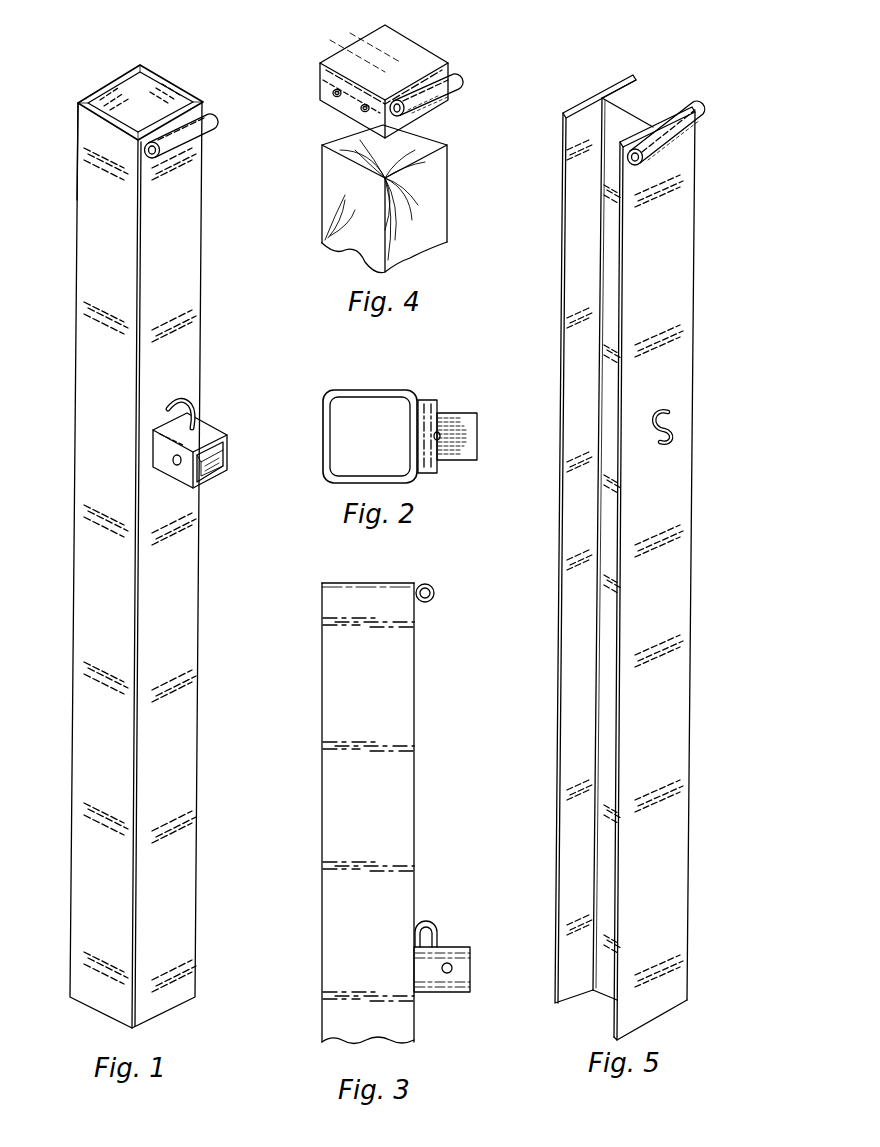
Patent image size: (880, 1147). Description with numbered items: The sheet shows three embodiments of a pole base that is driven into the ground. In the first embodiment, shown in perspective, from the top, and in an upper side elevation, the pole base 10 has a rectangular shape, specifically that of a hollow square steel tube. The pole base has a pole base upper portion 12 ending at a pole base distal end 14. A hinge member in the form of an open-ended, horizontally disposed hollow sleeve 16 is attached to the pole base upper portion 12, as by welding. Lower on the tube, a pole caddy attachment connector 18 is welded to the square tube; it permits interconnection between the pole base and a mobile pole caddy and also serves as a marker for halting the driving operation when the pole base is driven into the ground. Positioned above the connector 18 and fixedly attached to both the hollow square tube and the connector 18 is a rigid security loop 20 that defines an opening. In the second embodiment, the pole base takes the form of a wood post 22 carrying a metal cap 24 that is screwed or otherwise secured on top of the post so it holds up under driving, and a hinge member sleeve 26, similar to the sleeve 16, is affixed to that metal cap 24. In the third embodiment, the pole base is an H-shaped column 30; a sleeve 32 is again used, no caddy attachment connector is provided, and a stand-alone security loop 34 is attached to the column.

In FIG. 1, the pole base 10 is at (80, 428).
In FIG. 2, the pole base 10 is at (370, 392).
In FIG. 3, the pole base 10 is at (403, 720).
In FIG. 1, the pole base upper portion 12 is at (88, 135).
In FIG. 3, the pole base upper portion 12 is at (322, 607).
In FIG. 1, the pole base distal end 14 is at (165, 90).
In FIG. 2, the pole base distal end 14 is at (323, 435).
In FIG. 3, the pole base distal end 14 is at (382, 583).
In FIG. 1, the hollow sleeve 16 is at (190, 140).
In FIG. 3, the hollow sleeve 16 is at (435, 595).
In FIG. 1, the pole caddy attachment connector 18 is at (210, 427).
In FIG. 2, the pole caddy attachment connector 18 is at (455, 415).
In FIG. 3, the pole caddy attachment connector 18 is at (455, 950).
In FIG. 1, the rigid security loop 20 is at (187, 400).
In FIG. 3, the rigid security loop 20 is at (430, 925).
In FIG. 4, the wood post 22 is at (432, 180).
In FIG. 4, the metal cap 24 is at (400, 50).
In FIG. 4, the hinge member sleeve 26 is at (455, 88).
In FIG. 5, the H shaped column 30 is at (683, 300).
In FIG. 5, the sleeve 32 is at (670, 142).
In FIG. 5, the stand-alone security loop 34 is at (668, 422).